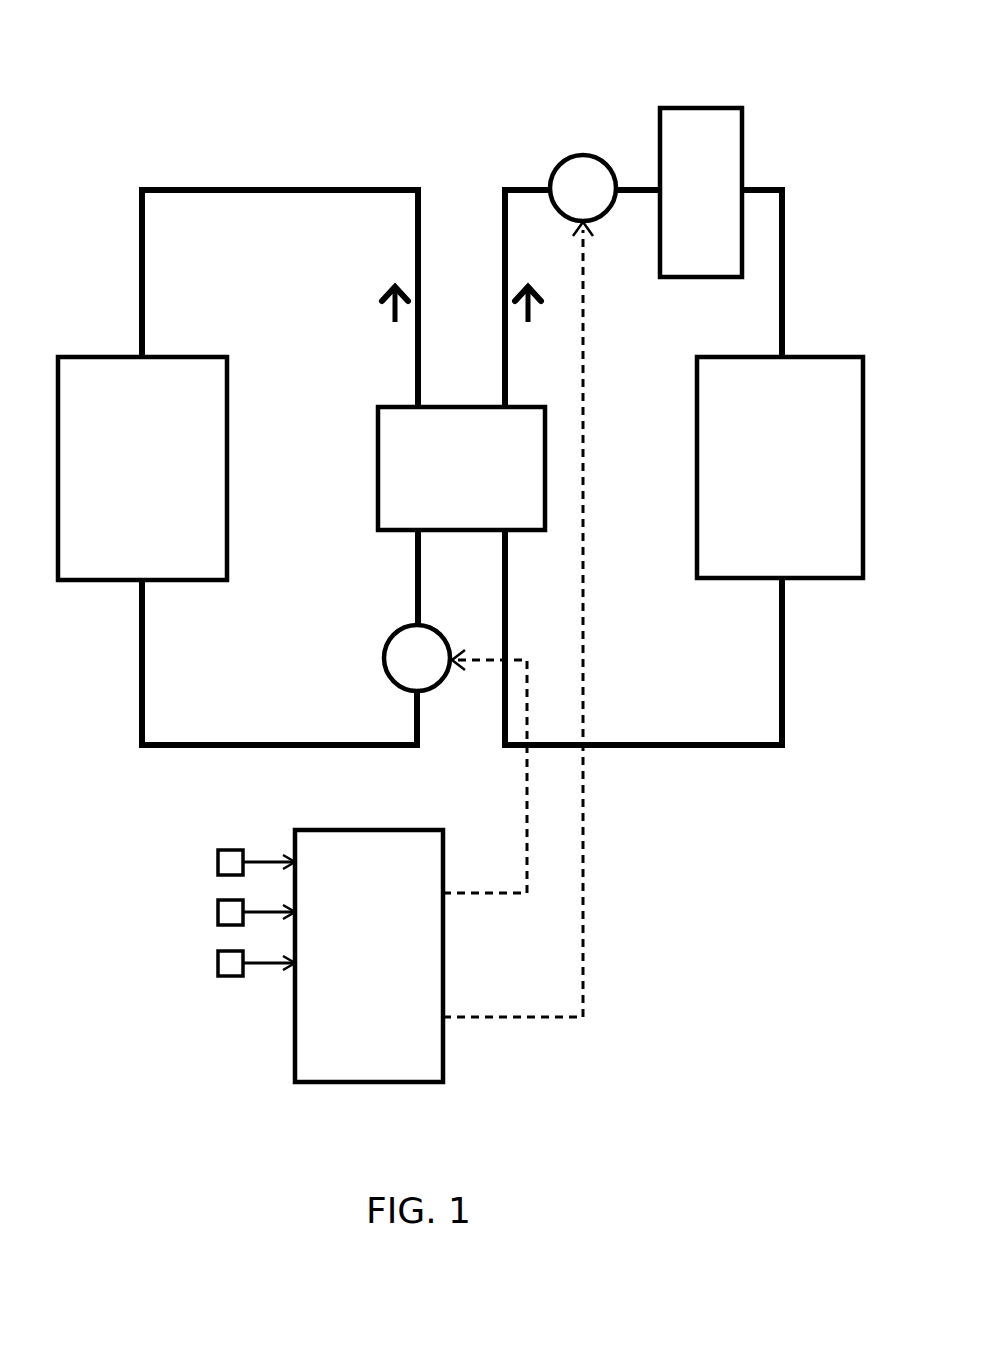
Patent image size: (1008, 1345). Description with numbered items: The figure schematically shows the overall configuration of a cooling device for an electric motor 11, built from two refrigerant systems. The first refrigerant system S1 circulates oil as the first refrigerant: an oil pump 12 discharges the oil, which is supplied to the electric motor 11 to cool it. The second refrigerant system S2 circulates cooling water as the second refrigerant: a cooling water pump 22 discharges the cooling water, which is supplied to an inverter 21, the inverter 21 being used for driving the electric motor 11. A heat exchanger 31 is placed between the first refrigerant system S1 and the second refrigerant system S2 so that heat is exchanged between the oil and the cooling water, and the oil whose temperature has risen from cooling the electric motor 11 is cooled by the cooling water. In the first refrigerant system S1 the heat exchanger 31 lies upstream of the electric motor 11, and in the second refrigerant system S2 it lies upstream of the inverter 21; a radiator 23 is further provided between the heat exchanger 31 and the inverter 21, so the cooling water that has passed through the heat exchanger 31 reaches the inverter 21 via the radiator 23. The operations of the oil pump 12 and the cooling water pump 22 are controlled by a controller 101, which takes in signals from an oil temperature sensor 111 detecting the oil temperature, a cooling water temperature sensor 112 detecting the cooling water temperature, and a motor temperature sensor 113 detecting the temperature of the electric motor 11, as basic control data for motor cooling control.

The first refrigerant system S1 is at (350, 112).
The second refrigerant system S2 is at (790, 112).
The electric motor 11 is at (98, 357).
The oil pump 12 is at (396, 634).
The inverter 21 is at (829, 357).
The cooling water pump 22 is at (561, 167).
The radiator 23 is at (716, 108).
The heat exchanger 31 is at (398, 407).
The controller 101 is at (330, 1082).
The oil temperature sensor 111 is at (218, 861).
The cooling water temperature sensor 112 is at (218, 911).
The motor temperature sensor 113 is at (218, 962).